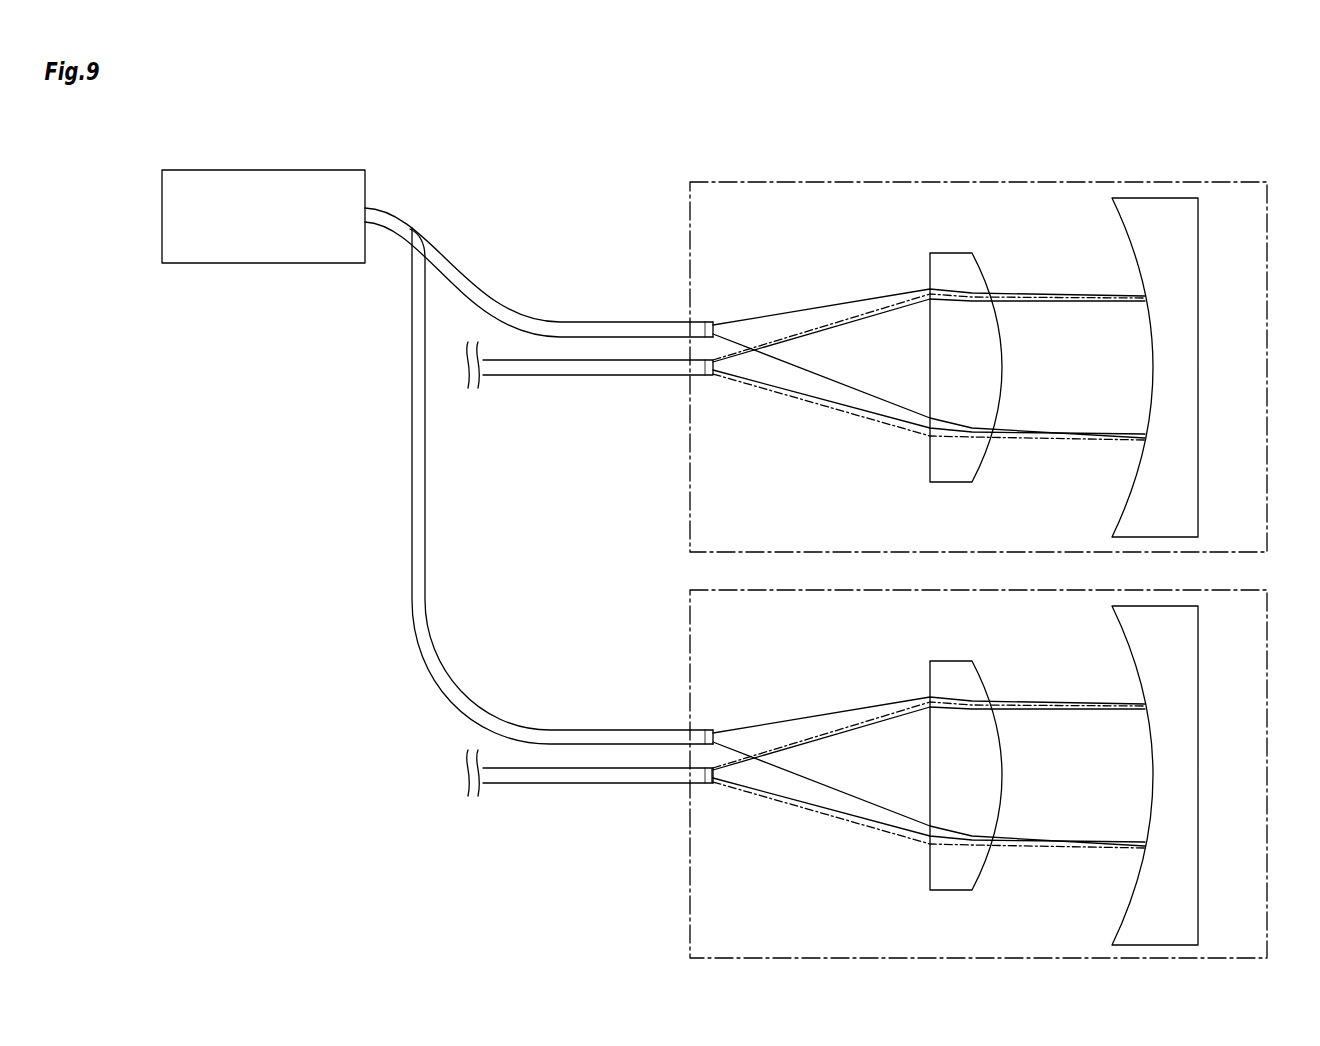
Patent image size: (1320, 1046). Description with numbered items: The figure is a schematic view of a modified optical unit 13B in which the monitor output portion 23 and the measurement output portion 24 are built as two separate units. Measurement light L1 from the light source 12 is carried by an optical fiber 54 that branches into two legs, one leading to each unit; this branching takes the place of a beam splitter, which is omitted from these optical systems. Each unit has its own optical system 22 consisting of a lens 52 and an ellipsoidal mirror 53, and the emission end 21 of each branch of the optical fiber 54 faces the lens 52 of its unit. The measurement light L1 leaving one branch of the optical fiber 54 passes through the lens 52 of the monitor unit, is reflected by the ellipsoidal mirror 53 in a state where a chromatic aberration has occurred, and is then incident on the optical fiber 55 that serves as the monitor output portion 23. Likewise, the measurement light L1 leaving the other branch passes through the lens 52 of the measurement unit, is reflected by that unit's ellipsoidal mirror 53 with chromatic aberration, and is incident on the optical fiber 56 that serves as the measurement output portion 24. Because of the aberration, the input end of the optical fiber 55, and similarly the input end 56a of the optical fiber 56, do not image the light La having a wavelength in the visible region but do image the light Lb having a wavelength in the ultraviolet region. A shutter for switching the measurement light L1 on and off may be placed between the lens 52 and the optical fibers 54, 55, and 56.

The light source 12 is at (268, 170).
The optical unit 13B is at (685, 142).
The emission end of optical fiber 21 is at (680, 307).
The optical system 22 is at (1003, 232).
The monitor output portion 23 is at (681, 387).
The measurement output portion 24 is at (681, 795).
The lens 52 is at (950, 253).
The ellipsoidal mirror 53 is at (1180, 240).
The optical fiber 54 is at (606, 321).
The optical fiber 55 is at (545, 383).
The optical fiber 56 is at (545, 790).
The input end 56a is at (727, 792).
The measurement light L1 is at (816, 268).
The light having a wavelength in the visible region La is at (837, 410).
The light having a wavelength in the ultraviolet region Lb is at (805, 397).